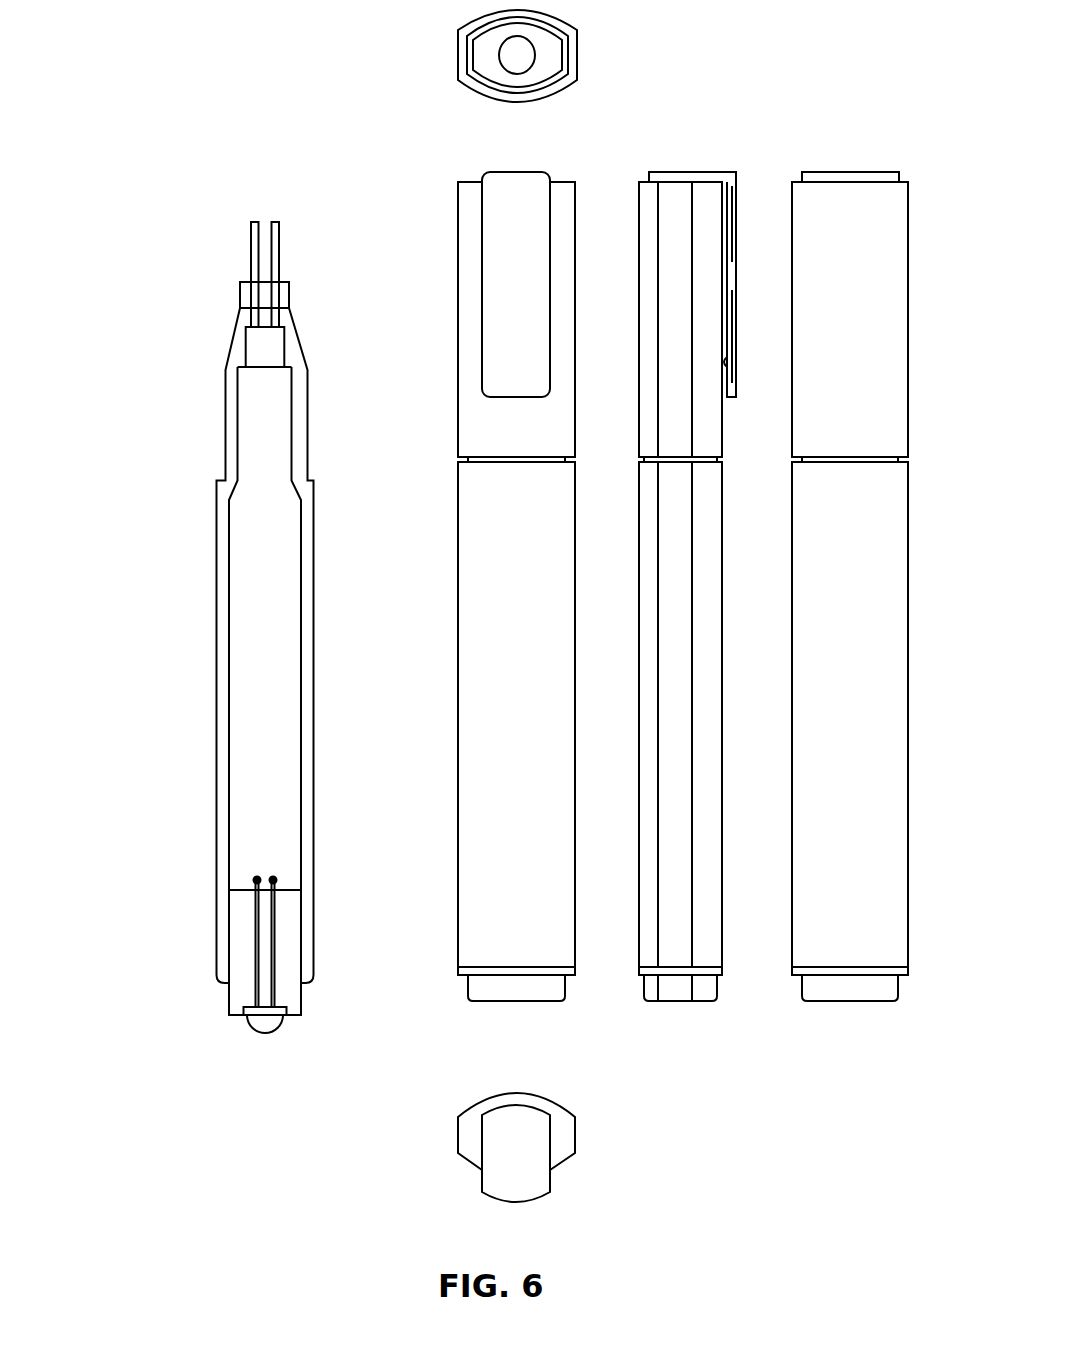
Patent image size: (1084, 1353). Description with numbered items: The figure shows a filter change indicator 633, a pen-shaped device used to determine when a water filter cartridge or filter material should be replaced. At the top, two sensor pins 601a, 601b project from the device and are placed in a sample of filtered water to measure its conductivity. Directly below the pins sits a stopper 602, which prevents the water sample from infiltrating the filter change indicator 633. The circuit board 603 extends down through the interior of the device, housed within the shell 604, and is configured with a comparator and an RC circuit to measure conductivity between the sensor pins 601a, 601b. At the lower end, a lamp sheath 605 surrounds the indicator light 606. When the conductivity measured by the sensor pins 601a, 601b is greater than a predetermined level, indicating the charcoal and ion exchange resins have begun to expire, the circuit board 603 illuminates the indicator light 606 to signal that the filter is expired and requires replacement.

The filter change indicator 633 is at (221, 184).
The sensor pin 601a is at (252, 230).
The sensor pin 601b is at (275, 245).
The stopper 602 is at (247, 297).
The circuit board 603 is at (255, 407).
The shell 604 is at (216, 593).
The lamp sheath 605 is at (228, 993).
The indicator light 606 is at (263, 1033).